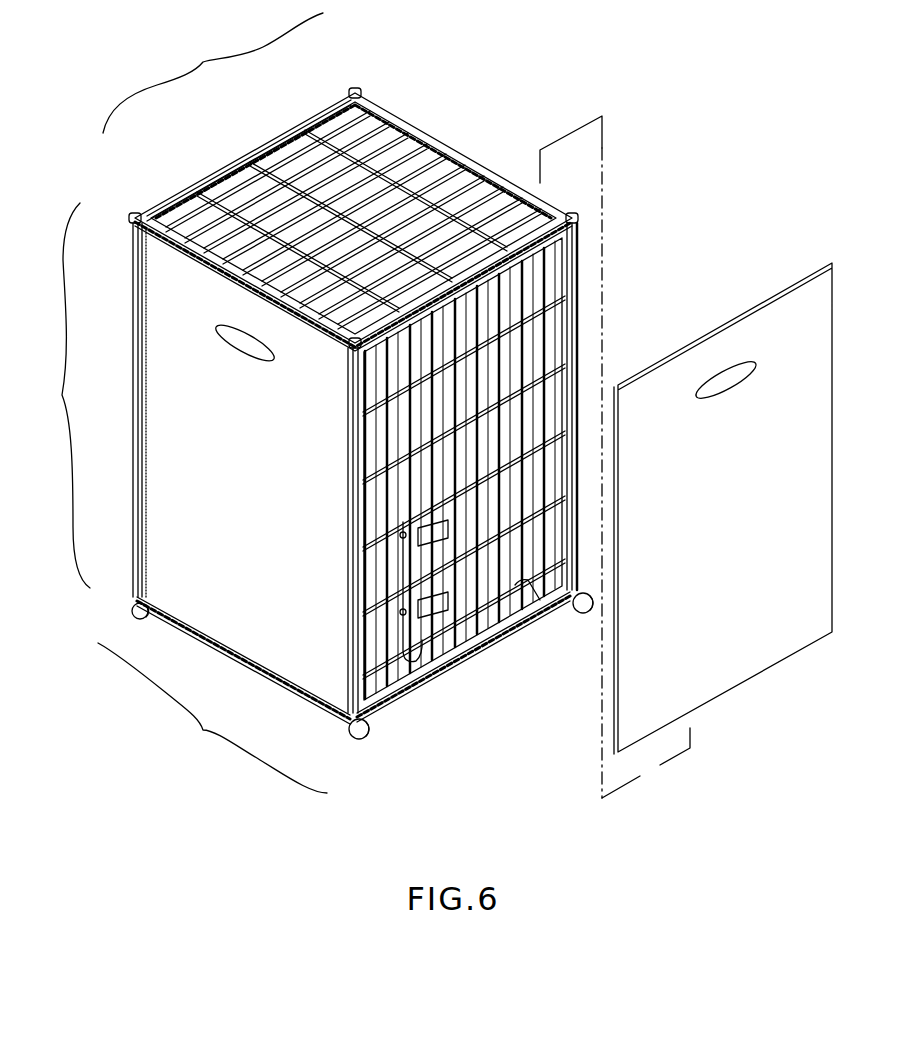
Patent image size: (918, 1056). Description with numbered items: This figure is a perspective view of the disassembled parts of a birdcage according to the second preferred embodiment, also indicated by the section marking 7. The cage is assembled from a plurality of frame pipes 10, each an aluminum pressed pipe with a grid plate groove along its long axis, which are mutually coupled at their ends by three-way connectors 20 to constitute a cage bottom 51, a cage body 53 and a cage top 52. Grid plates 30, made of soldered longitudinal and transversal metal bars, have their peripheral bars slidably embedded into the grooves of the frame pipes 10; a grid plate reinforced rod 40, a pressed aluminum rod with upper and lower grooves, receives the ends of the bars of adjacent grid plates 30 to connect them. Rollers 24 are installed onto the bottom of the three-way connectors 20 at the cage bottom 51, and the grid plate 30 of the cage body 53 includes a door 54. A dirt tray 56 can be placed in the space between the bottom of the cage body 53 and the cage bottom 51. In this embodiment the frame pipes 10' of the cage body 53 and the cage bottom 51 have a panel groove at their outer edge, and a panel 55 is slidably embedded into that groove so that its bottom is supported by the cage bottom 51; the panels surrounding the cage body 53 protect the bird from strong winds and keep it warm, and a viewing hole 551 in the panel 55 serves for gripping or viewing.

The frame pipe 10 is at (353, 394).
The frame pipe of the second embodiment 10' is at (367, 471).
The three-way connector 20 is at (354, 84).
The roller 24 is at (141, 620).
The grid plate 30 is at (478, 191).
The grid plate reinforced rod 40 is at (560, 344).
The cage bottom 51 is at (212, 718).
The cage top 52 is at (213, 73).
The cage body 53 is at (58, 395).
The door 54 is at (405, 668).
The panel 55 is at (778, 300).
The viewing hole 551 is at (738, 378).
The dirt tray 56 is at (527, 607).
The section line 7 is at (576, 322).